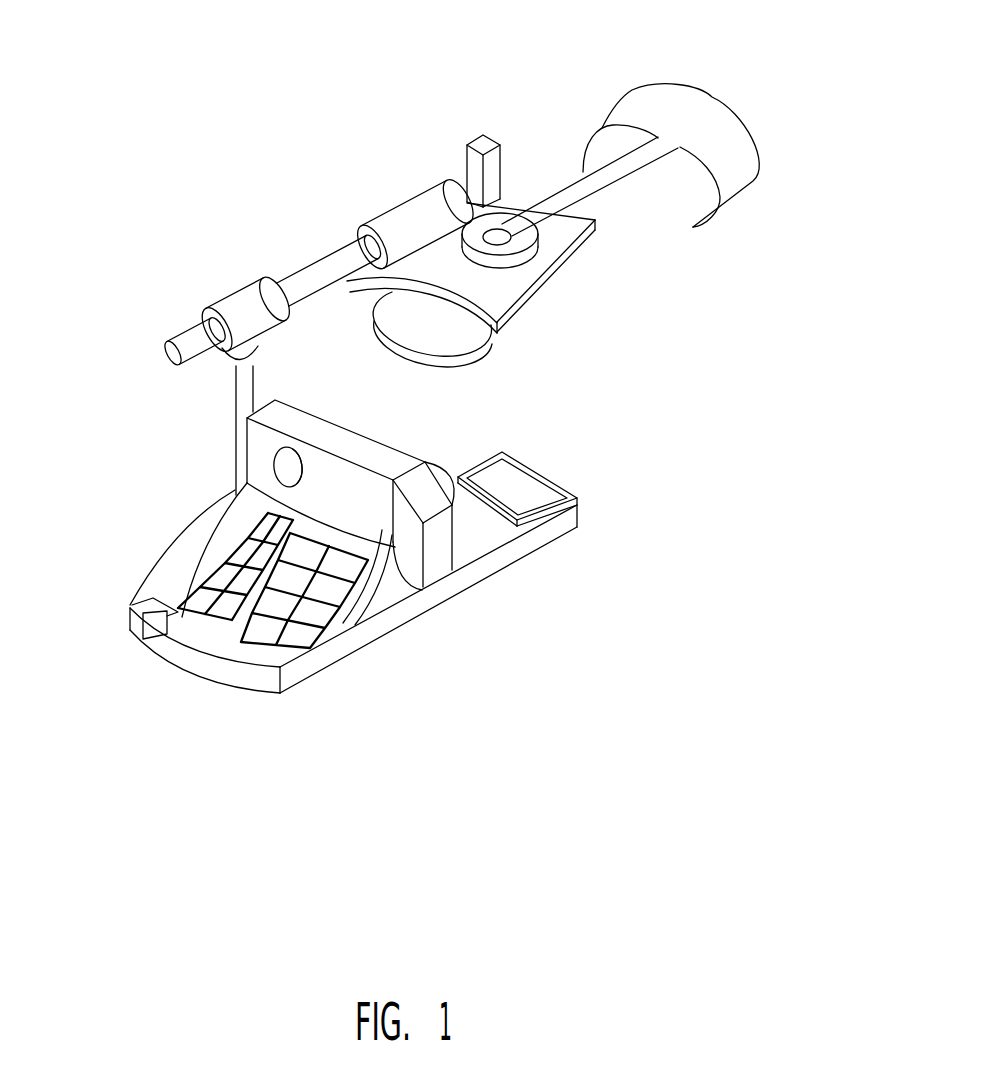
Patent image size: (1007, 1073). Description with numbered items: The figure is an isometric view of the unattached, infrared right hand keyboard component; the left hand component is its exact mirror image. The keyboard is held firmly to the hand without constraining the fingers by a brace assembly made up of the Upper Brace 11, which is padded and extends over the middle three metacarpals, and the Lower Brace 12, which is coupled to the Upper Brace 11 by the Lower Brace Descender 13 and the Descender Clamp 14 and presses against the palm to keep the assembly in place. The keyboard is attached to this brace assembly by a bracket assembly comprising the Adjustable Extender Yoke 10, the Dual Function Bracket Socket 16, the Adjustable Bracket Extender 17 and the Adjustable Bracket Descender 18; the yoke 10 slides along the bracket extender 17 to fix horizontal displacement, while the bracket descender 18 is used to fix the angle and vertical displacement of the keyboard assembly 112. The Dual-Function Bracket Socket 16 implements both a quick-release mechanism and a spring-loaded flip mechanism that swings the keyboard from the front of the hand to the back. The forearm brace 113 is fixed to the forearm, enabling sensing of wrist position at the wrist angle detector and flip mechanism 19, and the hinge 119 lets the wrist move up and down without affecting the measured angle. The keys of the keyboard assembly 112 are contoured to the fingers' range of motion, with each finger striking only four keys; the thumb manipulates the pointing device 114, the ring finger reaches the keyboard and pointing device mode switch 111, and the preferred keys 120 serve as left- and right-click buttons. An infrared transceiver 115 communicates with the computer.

The Adjustable Extender Yoke 10 is at (250, 299).
The Upper Brace 11 is at (479, 282).
The Lower Brace 12 is at (444, 329).
The Lower Brace Descender 13 is at (479, 124).
The Descender Clamp 14 is at (513, 178).
The Dual-Function Bracket Socket 16 is at (417, 209).
The Adjustable Bracket Extender 17 is at (305, 269).
The Adjustable Bracket Descender 18 is at (225, 398).
The wrist angle detector and flip mechanism 19 is at (517, 257).
The keyboard and pointing device mode switch 111 is at (279, 462).
The keyboard assembly 112 is at (362, 619).
The forearm brace 113 is at (724, 130).
The pointing device 114 is at (461, 461).
The infrared transceiver 115 is at (148, 607).
The hinge 119 is at (520, 242).
The keys for left- and right-click buttons 120 is at (306, 570).